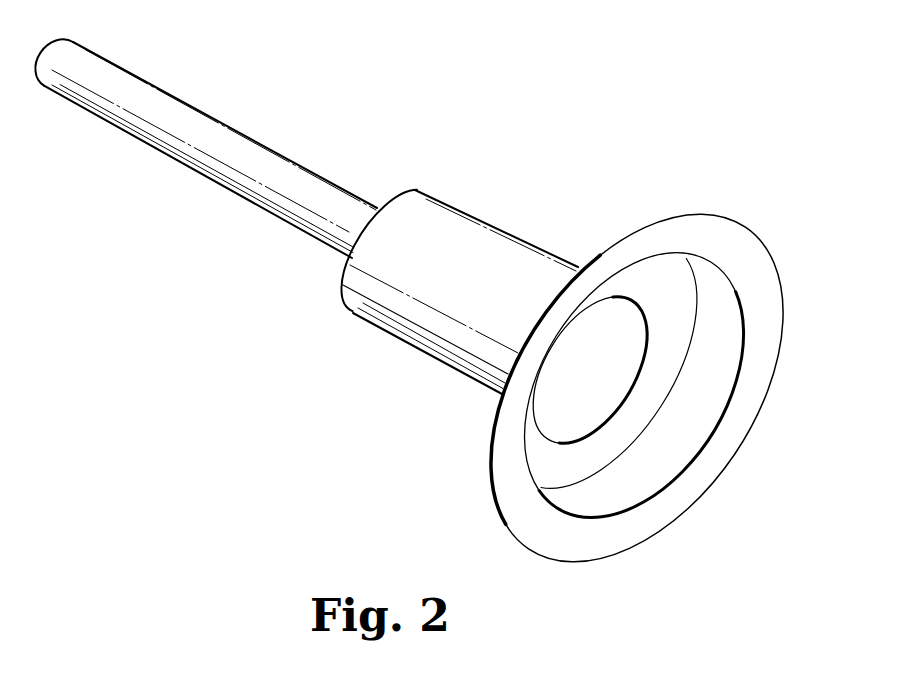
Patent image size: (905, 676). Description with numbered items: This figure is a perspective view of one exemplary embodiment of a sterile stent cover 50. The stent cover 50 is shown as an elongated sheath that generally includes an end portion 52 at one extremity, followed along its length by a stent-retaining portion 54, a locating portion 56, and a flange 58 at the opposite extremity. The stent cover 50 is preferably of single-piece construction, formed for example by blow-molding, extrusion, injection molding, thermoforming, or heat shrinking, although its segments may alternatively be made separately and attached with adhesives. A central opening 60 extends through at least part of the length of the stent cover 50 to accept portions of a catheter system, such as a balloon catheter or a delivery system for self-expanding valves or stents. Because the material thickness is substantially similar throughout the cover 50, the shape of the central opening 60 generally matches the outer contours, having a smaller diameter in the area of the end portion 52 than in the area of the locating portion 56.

The sterile stent cover 50 is at (439, 327).
The end portion 52 is at (203, 108).
The stent-retaining portion 54 is at (452, 206).
The locating portion 56 is at (598, 252).
The flange 58 is at (732, 243).
The central opening 60 is at (597, 347).